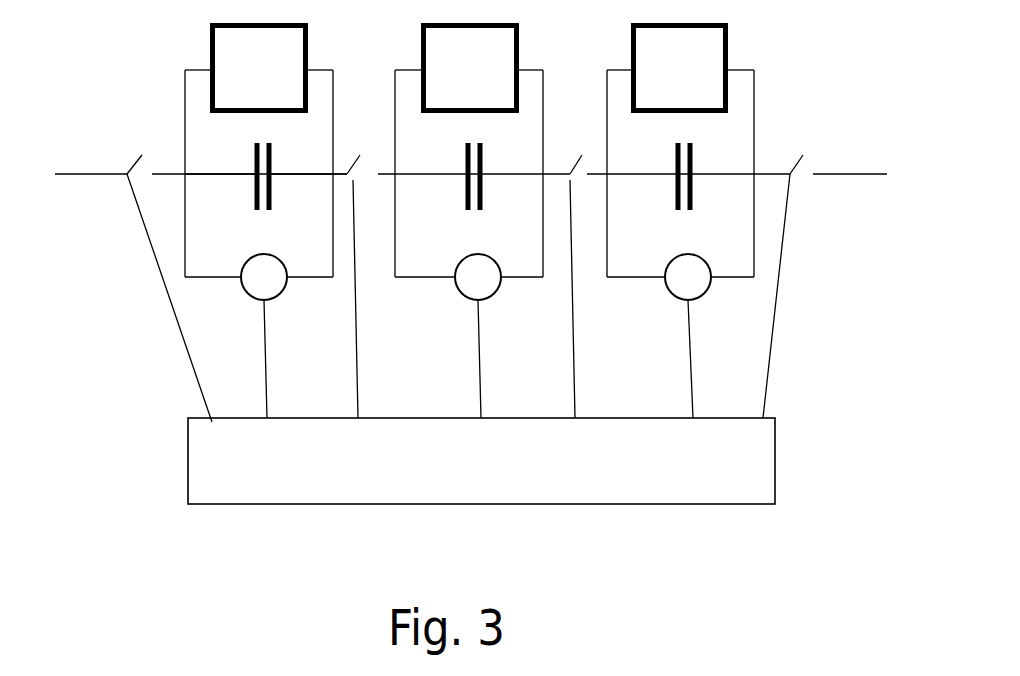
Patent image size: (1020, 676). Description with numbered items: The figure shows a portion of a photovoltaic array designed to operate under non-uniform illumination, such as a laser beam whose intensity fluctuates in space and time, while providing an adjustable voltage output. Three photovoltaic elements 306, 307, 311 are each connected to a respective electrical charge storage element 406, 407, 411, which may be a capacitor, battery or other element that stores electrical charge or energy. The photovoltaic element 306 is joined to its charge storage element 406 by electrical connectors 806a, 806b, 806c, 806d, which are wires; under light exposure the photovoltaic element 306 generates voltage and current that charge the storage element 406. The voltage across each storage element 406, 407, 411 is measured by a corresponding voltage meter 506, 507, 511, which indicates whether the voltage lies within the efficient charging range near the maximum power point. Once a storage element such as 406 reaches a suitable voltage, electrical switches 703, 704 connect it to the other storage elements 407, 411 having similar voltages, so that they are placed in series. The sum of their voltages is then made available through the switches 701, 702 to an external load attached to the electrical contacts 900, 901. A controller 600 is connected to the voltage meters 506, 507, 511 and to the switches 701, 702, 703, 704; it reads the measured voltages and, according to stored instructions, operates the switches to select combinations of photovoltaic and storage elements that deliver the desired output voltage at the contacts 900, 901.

The photovoltaic element 306 is at (259, 68).
The photovoltaic element 307 is at (470, 68).
The photovoltaic element 311 is at (680, 68).
The electrical charge storage element 406 is at (248, 198).
The electrical charge storage element 407 is at (462, 193).
The electrical charge storage element 411 is at (670, 188).
The voltage meter 506 is at (237, 292).
The voltage meter 507 is at (453, 295).
The voltage meter 511 is at (660, 293).
The controller 600 is at (481, 461).
The electrical switch 701 is at (144, 143).
The electrical switch 702 is at (803, 143).
The electrical switch 703 is at (360, 143).
The electrical switch 704 is at (575, 143).
The electrical connector 806a is at (175, 78).
The electrical connector 806b is at (222, 163).
The electrical connector 806c is at (342, 78).
The electrical connector 806d is at (303, 180).
The electrical contact 900 is at (67, 179).
The electrical contact 901 is at (867, 178).